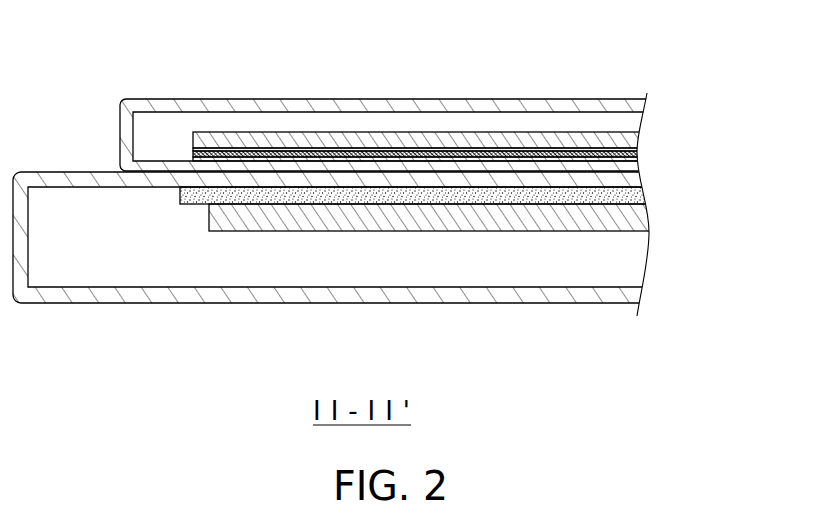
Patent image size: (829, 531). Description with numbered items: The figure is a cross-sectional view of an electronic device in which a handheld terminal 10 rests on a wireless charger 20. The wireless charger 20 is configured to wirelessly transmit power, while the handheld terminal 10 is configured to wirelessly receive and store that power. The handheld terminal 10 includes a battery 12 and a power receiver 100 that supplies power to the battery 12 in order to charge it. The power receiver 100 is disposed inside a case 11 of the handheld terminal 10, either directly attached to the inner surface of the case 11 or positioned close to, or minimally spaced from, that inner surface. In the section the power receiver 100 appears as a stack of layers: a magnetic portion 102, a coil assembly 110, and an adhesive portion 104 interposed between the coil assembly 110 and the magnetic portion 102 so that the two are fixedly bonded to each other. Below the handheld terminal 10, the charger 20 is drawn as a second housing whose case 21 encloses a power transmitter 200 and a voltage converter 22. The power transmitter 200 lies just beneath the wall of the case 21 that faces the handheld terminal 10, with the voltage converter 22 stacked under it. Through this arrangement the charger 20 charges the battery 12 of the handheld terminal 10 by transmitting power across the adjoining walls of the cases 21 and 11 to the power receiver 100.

The handheld terminal 10 is at (490, 92).
The case 11 is at (178, 164).
The battery 12 is at (638, 139).
The power receiver 100 is at (742, 120).
The magnetic portion 102 is at (638, 148).
The adhesive portion 104 is at (638, 153).
The coil assembly 110 is at (638, 159).
The wireless charger 20 is at (458, 322).
The case 21 is at (190, 304).
The power transmitter 200 is at (640, 193).
The voltage converter 22 is at (642, 217).